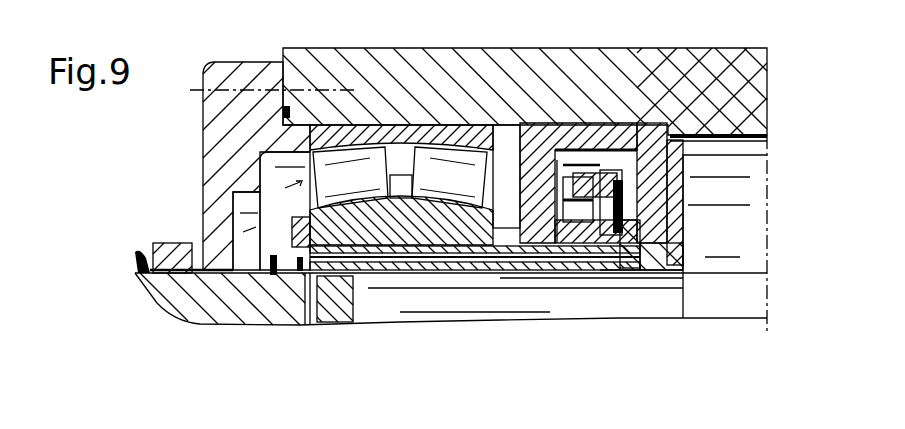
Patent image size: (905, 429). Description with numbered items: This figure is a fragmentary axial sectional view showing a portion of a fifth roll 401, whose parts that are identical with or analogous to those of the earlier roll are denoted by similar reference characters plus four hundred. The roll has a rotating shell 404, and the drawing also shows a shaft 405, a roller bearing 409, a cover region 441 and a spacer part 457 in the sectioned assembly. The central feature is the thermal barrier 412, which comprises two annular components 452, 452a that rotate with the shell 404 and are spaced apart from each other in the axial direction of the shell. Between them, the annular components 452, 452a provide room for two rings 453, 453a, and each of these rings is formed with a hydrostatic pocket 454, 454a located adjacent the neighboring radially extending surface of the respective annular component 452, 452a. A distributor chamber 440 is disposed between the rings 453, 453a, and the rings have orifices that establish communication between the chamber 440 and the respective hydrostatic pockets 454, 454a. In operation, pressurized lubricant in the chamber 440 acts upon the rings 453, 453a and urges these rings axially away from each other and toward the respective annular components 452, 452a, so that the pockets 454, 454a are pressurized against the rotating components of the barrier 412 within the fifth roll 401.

The fifth roll 401 is at (178, 161).
The shell 404 is at (592, 65).
The shaft 405 is at (401, 312).
The roller bearing 409 is at (356, 172).
The thermal barrier 412 is at (617, 110).
The distributor chamber 440 is at (577, 215).
The cover 441 is at (696, 189).
The annular component 452 is at (540, 260).
The annular component 452a is at (663, 202).
The ring 453 is at (560, 200).
The ring 453a is at (637, 270).
The hydrostatic pocket 454 is at (548, 155).
The hydrostatic pocket 454a is at (670, 128).
The spacer ring 457 is at (666, 262).